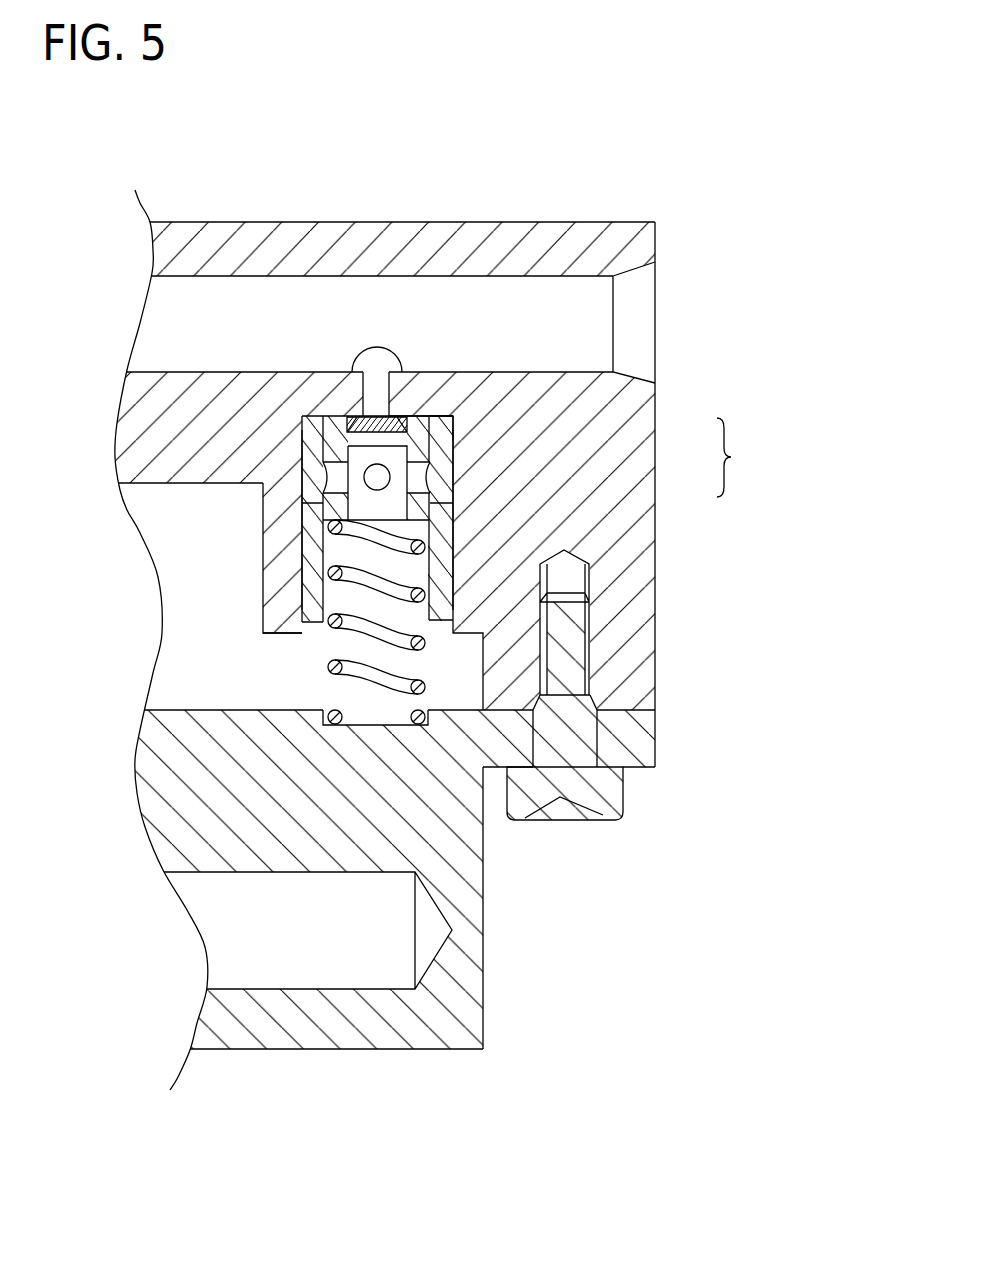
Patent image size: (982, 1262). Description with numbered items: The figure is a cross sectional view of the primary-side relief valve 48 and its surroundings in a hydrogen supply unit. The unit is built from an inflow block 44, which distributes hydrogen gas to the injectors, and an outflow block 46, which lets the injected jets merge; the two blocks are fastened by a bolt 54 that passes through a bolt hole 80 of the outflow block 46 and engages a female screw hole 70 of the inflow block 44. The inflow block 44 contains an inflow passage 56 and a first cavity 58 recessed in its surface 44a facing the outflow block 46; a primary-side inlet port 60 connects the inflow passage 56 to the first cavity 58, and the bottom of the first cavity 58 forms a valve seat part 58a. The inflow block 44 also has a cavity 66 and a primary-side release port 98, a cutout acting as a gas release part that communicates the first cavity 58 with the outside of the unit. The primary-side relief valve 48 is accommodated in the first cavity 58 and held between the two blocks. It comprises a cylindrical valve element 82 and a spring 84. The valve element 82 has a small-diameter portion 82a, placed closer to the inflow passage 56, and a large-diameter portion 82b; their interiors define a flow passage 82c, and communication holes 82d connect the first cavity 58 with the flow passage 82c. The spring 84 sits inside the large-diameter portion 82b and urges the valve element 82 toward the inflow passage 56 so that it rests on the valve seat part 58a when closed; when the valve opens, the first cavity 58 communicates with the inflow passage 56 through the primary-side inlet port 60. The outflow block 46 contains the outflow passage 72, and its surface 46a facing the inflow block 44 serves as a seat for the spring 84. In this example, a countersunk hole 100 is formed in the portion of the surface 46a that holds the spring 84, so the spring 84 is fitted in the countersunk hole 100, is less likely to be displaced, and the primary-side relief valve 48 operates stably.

The inflow block 44 is at (669, 585).
The surface of the inflow block 44a is at (632, 714).
The outflow block 46 is at (497, 963).
The surface of the outflow block 46a is at (220, 710).
The primary-side relief valve 48 is at (743, 457).
The bolt 54 is at (545, 800).
The inflow passage 56 is at (192, 332).
The first cavity 58 is at (313, 424).
The valve seat part 58a is at (436, 440).
The primary-side inlet port 60 is at (377, 360).
The cavity 66 is at (263, 563).
The female screw hole 70 is at (574, 648).
The outflow passage 72 is at (282, 948).
The bolt hole 80 is at (585, 748).
The valve element 82 is at (427, 449).
The small-diameter portion 82a is at (425, 440).
The large-diameter portion 82b is at (440, 582).
The flow passage 82c is at (303, 607).
The communication holes 82d is at (335, 484).
The spring 84 is at (402, 580).
The primary-side release port 98 is at (280, 633).
The countersunk hole 100 is at (350, 708).